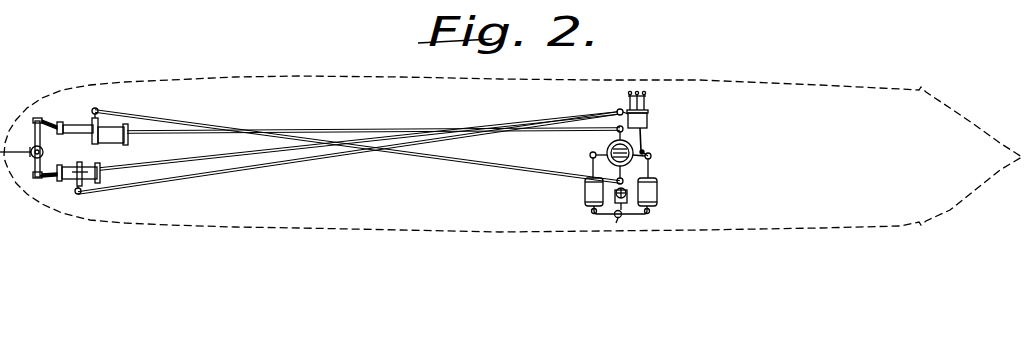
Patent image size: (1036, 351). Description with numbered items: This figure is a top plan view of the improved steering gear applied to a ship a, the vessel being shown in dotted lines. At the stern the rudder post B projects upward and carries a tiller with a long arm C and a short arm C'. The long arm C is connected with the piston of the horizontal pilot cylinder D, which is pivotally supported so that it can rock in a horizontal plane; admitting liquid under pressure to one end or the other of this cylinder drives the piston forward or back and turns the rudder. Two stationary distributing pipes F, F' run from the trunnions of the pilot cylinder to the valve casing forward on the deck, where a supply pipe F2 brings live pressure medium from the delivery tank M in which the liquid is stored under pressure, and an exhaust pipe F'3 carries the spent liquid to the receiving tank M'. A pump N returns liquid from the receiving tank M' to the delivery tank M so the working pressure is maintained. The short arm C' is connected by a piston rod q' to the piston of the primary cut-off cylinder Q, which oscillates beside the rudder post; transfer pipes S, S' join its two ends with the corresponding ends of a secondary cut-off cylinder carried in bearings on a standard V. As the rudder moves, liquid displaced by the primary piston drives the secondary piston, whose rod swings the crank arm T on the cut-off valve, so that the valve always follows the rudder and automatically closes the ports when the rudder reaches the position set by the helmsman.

The ship a is at (513, 154).
The long tiller arm C is at (36, 147).
The short tiller arm C' is at (34, 168).
The rudder post B is at (43, 153).
The pilot cylinder D is at (116, 130).
The primary cut-off cylinder Q is at (66, 181).
The piston rod q' is at (48, 187).
The distributing pipe F is at (359, 138).
The distributing pipe F' is at (375, 141).
The transfer pipe S is at (350, 160).
The transfer pipe S' is at (359, 159).
The standard V is at (676, 125).
The crank arm T is at (628, 158).
The supply pipe F2 is at (592, 156).
The exhaust pipe F'3 is at (665, 165).
The delivery tank M is at (587, 196).
The receiving tank M' is at (654, 196).
The pump N is at (616, 223).